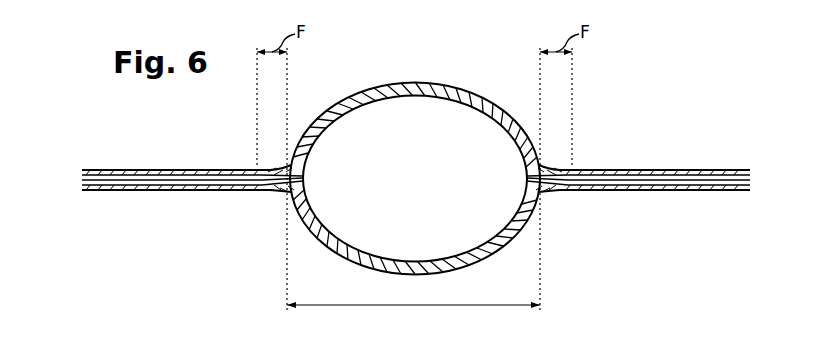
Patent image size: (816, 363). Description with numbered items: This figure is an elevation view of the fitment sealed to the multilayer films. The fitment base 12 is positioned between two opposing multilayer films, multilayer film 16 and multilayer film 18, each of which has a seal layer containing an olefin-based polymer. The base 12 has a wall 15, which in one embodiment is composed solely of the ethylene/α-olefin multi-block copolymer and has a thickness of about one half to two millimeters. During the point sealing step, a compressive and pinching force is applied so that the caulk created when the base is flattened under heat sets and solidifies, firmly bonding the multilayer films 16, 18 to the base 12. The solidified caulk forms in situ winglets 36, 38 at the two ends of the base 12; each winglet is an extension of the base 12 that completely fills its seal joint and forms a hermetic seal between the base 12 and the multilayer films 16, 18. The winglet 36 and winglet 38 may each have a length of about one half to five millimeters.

The base 12 is at (480, 120).
The wall 15 is at (357, 238).
The multilayer film 16 is at (156, 171).
The multilayer film 18 is at (160, 190).
The in situ winglet 36 is at (277, 189).
The in situ winglet 38 is at (555, 188).